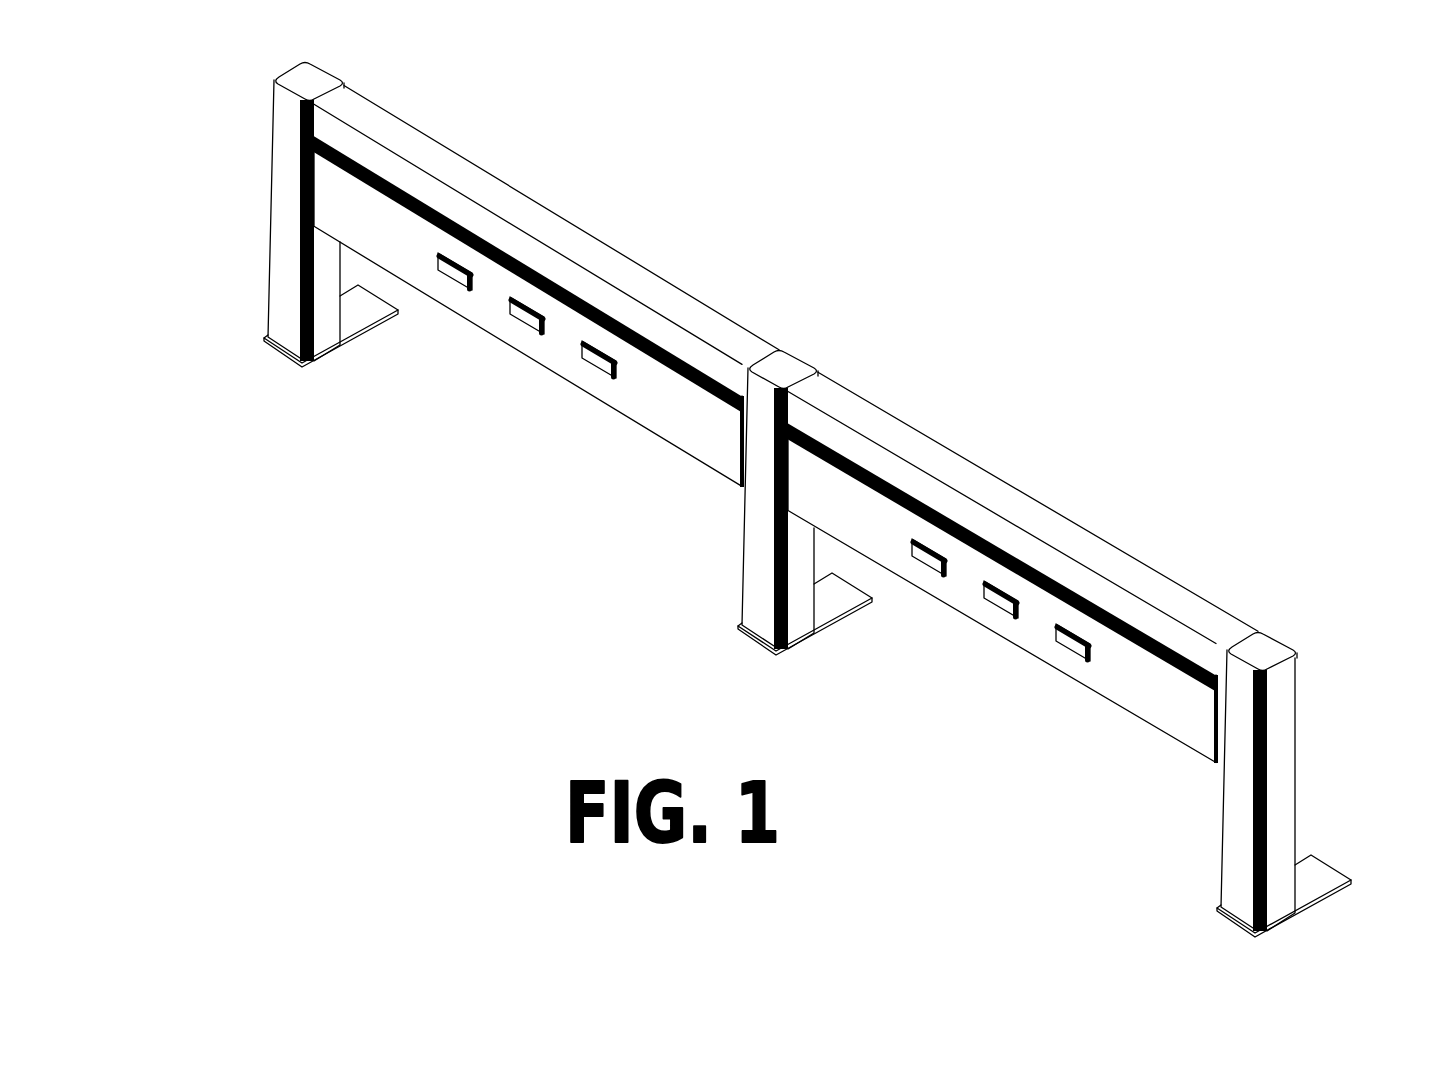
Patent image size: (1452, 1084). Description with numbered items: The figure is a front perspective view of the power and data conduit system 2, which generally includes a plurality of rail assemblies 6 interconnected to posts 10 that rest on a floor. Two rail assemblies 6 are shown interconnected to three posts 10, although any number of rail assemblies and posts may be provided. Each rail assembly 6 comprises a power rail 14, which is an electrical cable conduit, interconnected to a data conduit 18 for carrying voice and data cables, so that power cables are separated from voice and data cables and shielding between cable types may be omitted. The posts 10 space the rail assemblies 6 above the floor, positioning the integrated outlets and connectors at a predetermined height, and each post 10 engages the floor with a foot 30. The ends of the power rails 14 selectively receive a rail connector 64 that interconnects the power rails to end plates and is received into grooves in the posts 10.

The power and data conduit system 2 is at (782, 500).
The rail assembly 6 is at (557, 298).
The post 10 is at (283, 306).
The power rail 14 is at (650, 402).
The data conduit 18 is at (578, 245).
The foot 30 is at (1318, 867).
The rail connector 64 is at (792, 482).